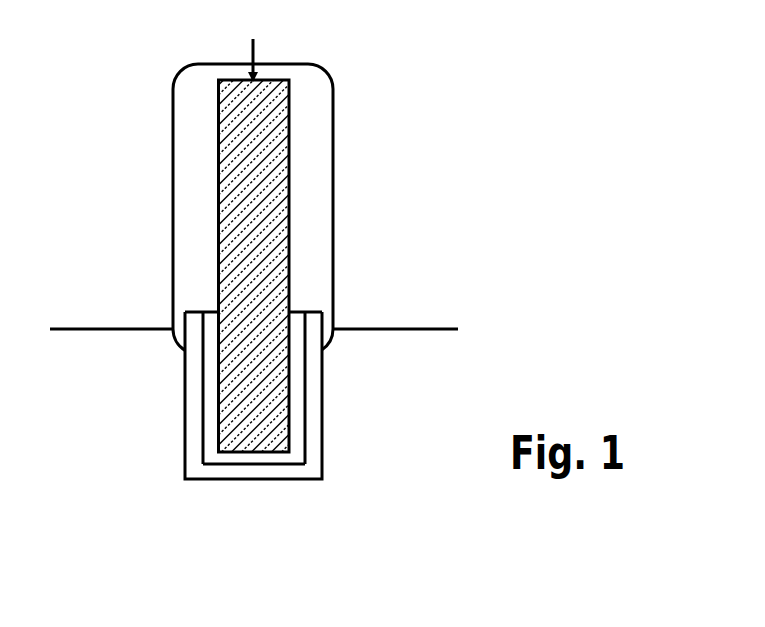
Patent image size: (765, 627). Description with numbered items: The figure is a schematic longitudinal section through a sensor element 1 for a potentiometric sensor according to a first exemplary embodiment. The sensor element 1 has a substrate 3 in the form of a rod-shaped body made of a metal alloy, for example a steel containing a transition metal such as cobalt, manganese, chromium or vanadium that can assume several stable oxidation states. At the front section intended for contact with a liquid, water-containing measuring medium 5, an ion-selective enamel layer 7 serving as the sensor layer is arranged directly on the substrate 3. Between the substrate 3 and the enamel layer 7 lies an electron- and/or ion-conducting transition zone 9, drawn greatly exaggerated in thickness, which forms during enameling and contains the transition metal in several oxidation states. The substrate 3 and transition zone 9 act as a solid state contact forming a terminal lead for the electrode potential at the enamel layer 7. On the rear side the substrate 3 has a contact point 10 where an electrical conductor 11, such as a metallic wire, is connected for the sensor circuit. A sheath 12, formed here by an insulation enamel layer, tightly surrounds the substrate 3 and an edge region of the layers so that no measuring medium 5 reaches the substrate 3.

The sensor element 1 is at (397, 97).
The substrate 3 is at (272, 211).
The measuring medium 5 is at (430, 350).
The ion-selective enamel layer 7 is at (310, 467).
The transition zone 9 is at (237, 455).
The contact point 10 is at (255, 79).
The electrical conductor 11 is at (255, 49).
The sheath 12 is at (188, 216).